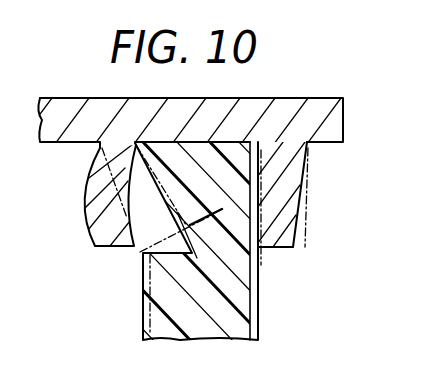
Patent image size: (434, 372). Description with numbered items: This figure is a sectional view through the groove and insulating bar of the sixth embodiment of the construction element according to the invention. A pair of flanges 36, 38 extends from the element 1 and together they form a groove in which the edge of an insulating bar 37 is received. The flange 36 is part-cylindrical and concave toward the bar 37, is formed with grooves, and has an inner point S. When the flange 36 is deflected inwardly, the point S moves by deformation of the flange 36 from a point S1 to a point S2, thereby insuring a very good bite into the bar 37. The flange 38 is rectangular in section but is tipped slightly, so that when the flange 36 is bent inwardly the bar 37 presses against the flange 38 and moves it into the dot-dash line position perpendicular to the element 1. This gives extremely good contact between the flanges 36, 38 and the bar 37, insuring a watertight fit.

The element 1 is at (263, 101).
The flange 36 is at (88, 205).
The insulating bar 37 is at (235, 325).
The flange 38 is at (290, 194).
The inner point S is at (134, 251).
The point S1 is at (186, 217).
The point S2 is at (188, 245).